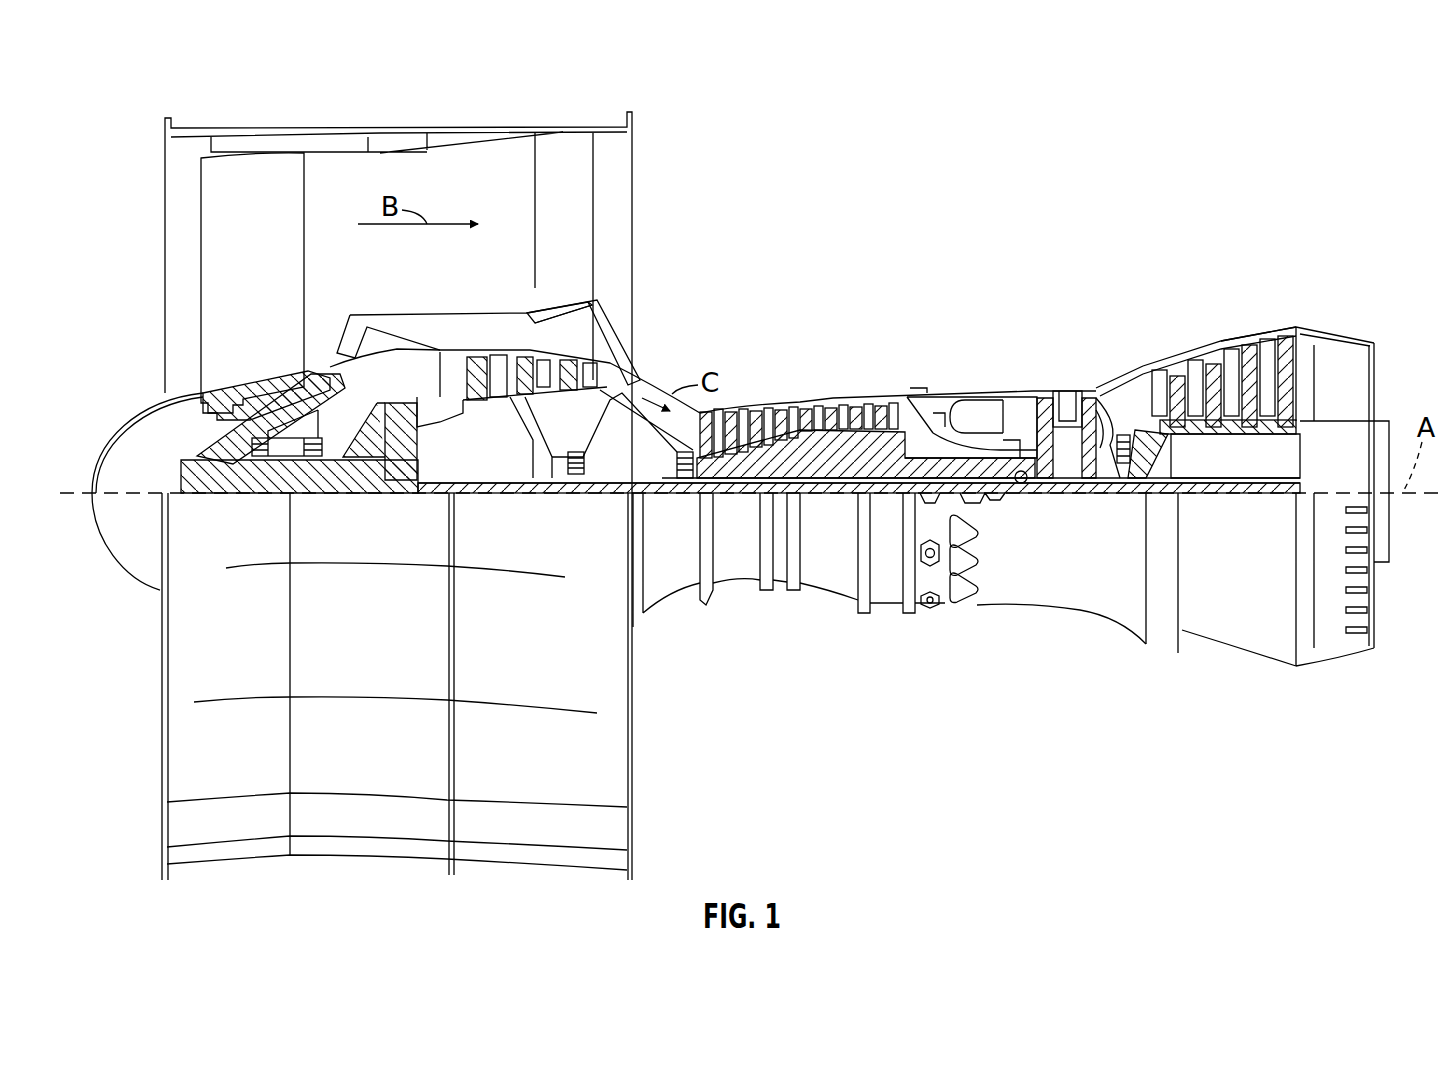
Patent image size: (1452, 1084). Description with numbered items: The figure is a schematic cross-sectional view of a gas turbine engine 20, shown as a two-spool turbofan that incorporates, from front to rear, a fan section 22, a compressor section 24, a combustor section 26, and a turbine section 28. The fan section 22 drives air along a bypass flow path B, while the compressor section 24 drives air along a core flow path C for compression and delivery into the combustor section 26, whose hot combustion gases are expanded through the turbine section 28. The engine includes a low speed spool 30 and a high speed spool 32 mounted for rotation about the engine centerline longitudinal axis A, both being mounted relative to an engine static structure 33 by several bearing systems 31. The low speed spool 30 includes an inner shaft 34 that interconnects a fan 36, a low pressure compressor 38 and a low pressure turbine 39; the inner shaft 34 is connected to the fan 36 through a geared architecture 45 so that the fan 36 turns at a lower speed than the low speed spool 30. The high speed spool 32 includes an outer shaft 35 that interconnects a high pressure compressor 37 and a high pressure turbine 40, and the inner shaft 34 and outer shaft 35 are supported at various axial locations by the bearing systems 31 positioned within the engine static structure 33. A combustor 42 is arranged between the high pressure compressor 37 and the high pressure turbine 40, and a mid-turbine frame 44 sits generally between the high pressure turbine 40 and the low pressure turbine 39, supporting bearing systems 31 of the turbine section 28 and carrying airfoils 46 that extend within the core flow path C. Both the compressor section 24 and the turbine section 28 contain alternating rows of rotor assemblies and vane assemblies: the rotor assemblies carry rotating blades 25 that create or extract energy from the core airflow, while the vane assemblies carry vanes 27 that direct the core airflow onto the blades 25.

The gas turbine engine 20 is at (1138, 176).
The fan section 22 is at (248, 112).
The compressor section 24 is at (712, 355).
The blades 25 is at (476, 362).
The combustor section 26 is at (991, 320).
The vanes 27 is at (502, 360).
The turbine section 28 is at (1227, 299).
The low speed spool 30 is at (848, 496).
The bearing systems 31 is at (265, 448).
The high speed spool 32 is at (897, 447).
The engine static structure 33 is at (896, 604).
The inner shaft 34 is at (653, 497).
The outer shaft 35 is at (1022, 482).
The fan 36 is at (277, 256).
The high pressure compressor 37 is at (807, 460).
The low pressure compressor 38 is at (598, 302).
The low pressure turbine 39 is at (1222, 348).
The high pressure turbine 40 is at (1064, 395).
The combustor 42 is at (973, 417).
The mid-turbine frame 44 is at (1130, 376).
The geared architecture 45 is at (397, 460).
The airfoils 46 is at (1112, 405).